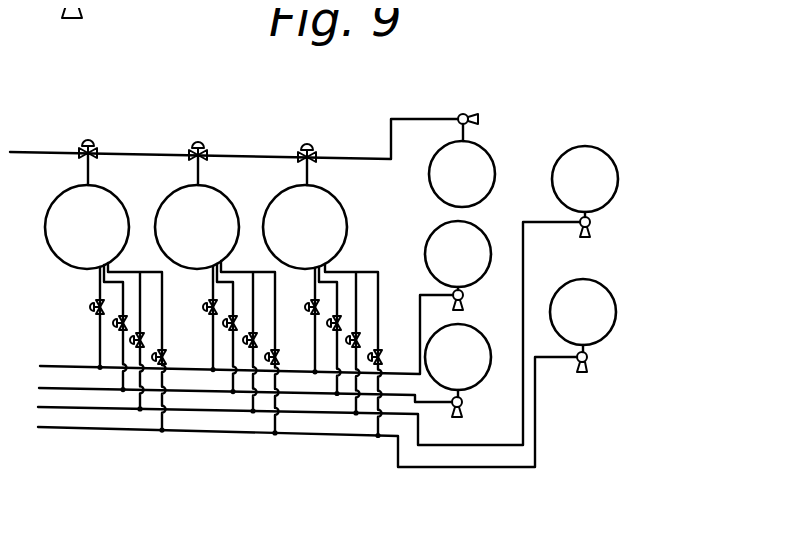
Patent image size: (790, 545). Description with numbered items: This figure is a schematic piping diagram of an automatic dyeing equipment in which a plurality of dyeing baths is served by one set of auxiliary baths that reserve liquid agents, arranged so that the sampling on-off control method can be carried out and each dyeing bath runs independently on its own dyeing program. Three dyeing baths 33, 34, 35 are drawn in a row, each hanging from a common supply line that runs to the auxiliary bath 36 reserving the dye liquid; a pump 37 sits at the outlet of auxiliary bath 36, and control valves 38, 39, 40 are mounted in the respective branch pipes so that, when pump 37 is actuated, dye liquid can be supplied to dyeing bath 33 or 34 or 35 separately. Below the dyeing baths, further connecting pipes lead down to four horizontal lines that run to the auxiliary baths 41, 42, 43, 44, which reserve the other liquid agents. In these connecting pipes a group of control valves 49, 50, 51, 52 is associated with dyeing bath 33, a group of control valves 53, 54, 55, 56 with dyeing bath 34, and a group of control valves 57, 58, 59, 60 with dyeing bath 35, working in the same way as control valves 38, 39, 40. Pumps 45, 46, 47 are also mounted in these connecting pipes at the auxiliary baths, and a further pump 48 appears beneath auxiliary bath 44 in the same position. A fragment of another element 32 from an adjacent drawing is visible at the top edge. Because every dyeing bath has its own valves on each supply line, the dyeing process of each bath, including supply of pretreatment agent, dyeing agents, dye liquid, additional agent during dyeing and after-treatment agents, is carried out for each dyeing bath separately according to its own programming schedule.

The pump 32 is at (76, 24).
The dyeing bath 33 is at (96, 190).
The dyeing bath 34 is at (206, 190).
The dyeing bath 35 is at (314, 188).
The auxiliary bath 36 is at (479, 154).
The pump 37 is at (470, 102).
The control valve 38 is at (302, 135).
The control valve 39 is at (193, 133).
The control valve 40 is at (84, 131).
The auxiliary bath 41 is at (470, 219).
The auxiliary bath 42 is at (470, 326).
The auxiliary bath 43 is at (597, 144).
The auxiliary bath 44 is at (604, 286).
The pump 45 is at (456, 288).
The pump 46 is at (454, 396).
The pump 47 is at (582, 213).
The pump 48 is at (580, 350).
The control valve 49 is at (84, 297).
The control valve 50 is at (107, 314).
The control valve 51 is at (125, 332).
The control valve 52 is at (217, 316).
The control valve 53 is at (198, 300).
The control valve 54 is at (168, 327).
The control valve 55 is at (239, 332).
The control valve 56 is at (262, 346).
The control valve 57 is at (300, 300).
The control valve 58 is at (333, 314).
The control valve 59 is at (352, 331).
The control valve 60 is at (365, 351).